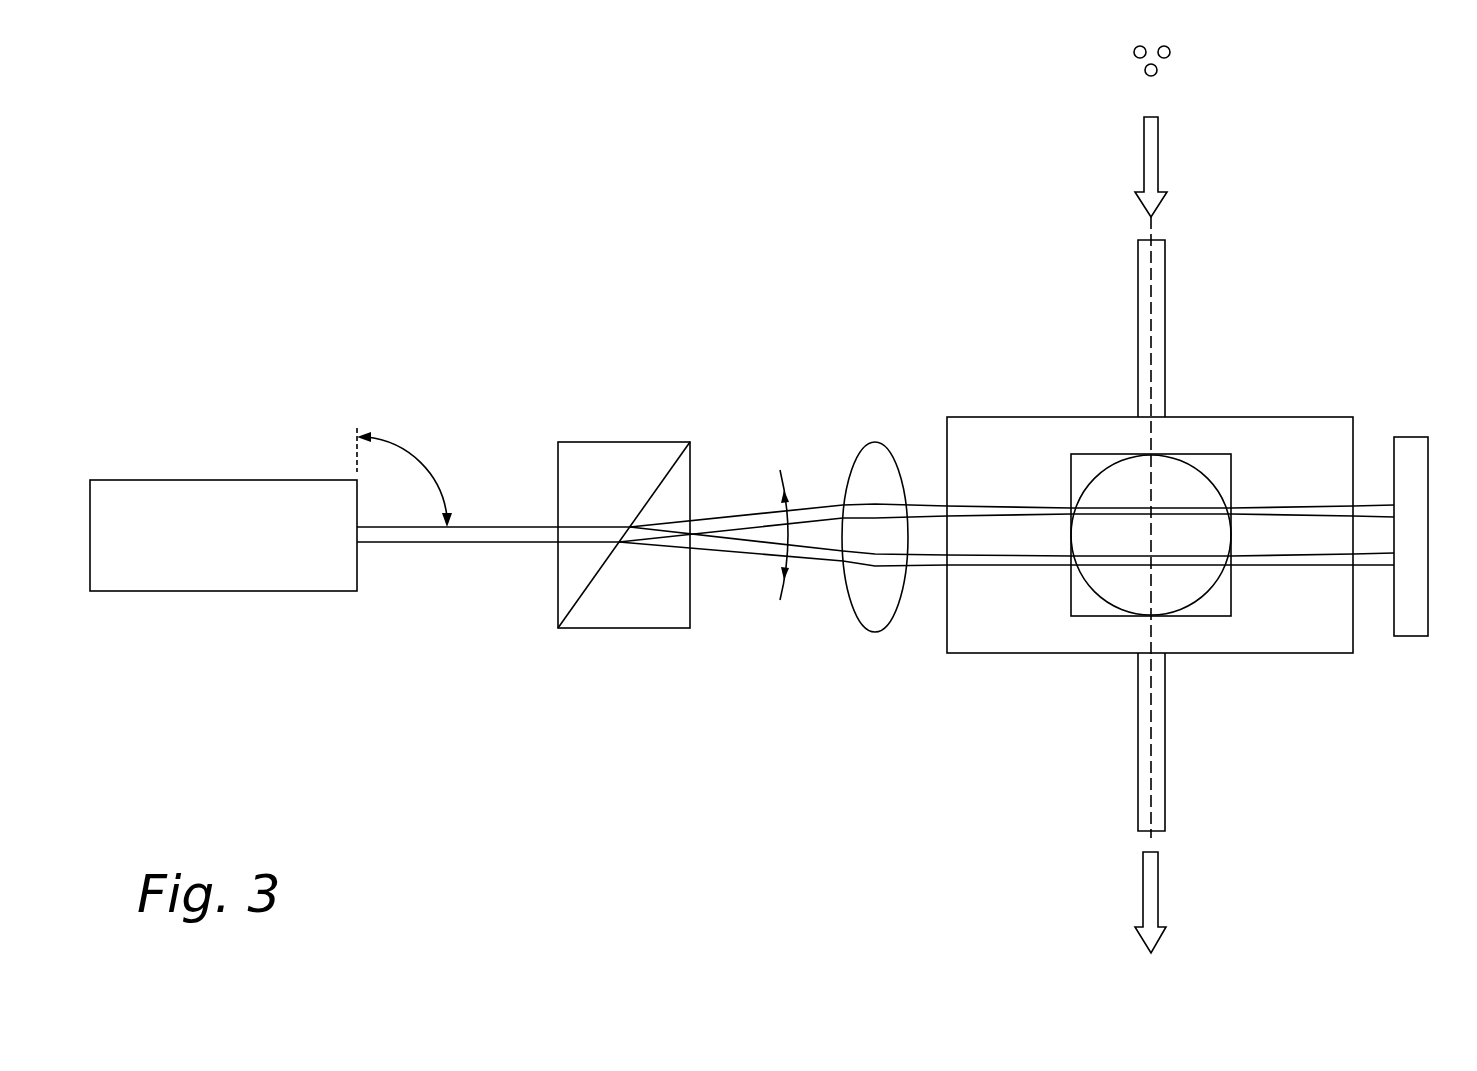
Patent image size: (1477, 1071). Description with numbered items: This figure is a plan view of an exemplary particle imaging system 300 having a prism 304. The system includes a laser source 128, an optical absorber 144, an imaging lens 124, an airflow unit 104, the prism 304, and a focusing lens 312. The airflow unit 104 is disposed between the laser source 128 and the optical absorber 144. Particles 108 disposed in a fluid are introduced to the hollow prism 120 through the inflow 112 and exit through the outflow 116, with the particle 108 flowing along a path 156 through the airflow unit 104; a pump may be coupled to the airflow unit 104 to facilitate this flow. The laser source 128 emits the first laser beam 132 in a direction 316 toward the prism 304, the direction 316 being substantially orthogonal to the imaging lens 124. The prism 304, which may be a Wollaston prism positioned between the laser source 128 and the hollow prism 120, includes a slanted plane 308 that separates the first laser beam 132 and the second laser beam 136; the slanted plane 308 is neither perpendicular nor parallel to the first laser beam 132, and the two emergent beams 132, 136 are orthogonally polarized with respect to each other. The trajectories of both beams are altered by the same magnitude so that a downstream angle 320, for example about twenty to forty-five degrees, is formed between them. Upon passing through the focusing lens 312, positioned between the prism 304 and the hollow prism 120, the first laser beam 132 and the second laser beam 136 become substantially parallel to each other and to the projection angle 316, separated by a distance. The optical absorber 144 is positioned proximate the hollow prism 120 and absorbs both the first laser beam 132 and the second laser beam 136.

The particle imaging system 300 is at (284, 115).
The particle 108 is at (1108, 52).
The path 156 is at (1158, 153).
The airflow unit 104 is at (1295, 296).
The inflow 112 is at (1138, 325).
The outflow 116 is at (1138, 747).
The hollow prism 120 is at (1305, 417).
The imaging lens 124 is at (1210, 590).
The optical absorber 144 is at (1412, 437).
The laser source 128 is at (247, 551).
The direction 316 is at (421, 463).
The prism 304 is at (622, 442).
The slanted plane 308 is at (659, 485).
The first laser beam 132 is at (990, 505).
The second laser beam 136 is at (990, 566).
The downstream angle 320 is at (786, 478).
The focusing lens 312 is at (876, 441).